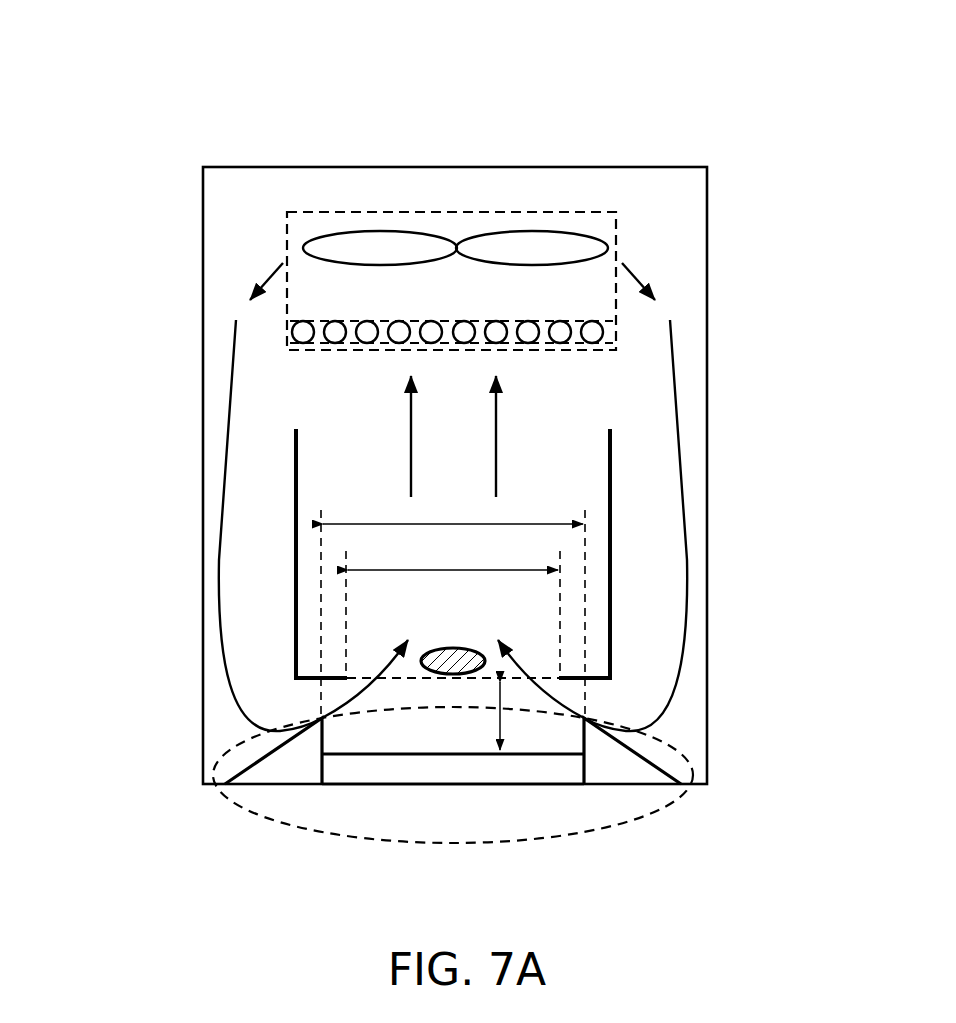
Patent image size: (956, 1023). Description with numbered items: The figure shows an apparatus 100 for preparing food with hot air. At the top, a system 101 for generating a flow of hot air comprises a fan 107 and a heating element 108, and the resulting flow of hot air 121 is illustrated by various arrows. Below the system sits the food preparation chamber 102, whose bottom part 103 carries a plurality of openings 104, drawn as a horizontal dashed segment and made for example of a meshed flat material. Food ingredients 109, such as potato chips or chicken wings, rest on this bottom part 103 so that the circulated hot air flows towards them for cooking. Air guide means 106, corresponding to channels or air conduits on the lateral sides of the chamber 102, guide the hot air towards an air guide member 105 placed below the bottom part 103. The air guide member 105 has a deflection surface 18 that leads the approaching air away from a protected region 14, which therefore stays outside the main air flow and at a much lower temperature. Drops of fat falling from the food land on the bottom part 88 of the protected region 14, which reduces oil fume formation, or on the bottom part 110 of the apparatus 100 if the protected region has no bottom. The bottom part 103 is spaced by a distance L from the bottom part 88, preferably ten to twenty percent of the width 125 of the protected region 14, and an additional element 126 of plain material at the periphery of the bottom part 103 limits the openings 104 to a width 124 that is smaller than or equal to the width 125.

The apparatus 100 is at (134, 118).
The system for generating a flow of hot air 101 is at (482, 210).
The fan 107 is at (380, 231).
The heating element 108 is at (303, 320).
The flow of hot air 121 is at (268, 276).
The air guide means 106 is at (248, 562).
The food preparation chamber 102 is at (612, 560).
The additional element 126 is at (313, 678).
The bottom part 103 is at (590, 678).
The width of the protected region 125 is at (453, 608).
The width of the area of openings 124 is at (453, 610).
The protected region 14 is at (419, 741).
The food ingredients 109 is at (463, 650).
The openings 104 is at (409, 678).
The deflection surface 18 is at (252, 763).
The bottom part of the air guide member 88 is at (565, 756).
The bottom part of the apparatus 110 is at (517, 786).
The air guide member 105 is at (624, 822).